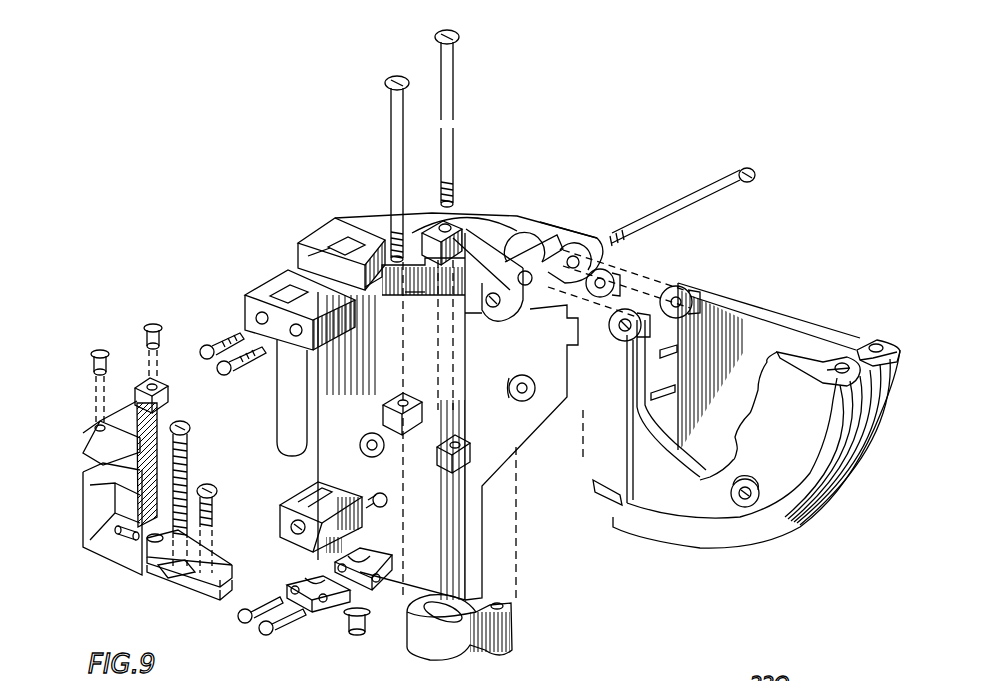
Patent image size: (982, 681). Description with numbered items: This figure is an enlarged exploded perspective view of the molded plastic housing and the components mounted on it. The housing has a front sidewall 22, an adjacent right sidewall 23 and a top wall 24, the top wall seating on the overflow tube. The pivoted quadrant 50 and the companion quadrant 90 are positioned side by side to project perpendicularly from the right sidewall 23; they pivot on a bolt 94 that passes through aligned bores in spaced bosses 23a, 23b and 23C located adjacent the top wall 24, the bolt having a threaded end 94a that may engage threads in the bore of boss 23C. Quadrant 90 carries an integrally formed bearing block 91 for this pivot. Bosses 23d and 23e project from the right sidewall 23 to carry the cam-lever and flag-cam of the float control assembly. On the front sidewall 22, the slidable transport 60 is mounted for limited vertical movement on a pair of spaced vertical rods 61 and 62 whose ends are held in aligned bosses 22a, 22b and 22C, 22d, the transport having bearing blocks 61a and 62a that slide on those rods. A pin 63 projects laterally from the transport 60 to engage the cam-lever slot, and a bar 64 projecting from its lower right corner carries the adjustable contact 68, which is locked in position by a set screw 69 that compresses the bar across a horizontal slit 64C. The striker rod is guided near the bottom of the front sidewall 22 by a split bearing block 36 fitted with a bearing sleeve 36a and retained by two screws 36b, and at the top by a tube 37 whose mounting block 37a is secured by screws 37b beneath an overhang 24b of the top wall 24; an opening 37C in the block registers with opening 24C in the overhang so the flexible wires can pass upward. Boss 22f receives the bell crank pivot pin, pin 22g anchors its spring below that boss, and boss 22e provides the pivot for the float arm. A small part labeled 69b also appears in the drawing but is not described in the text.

The front sidewall 22 is at (440, 528).
The boss 22a is at (402, 300).
The boss 22b is at (437, 388).
The boss 22C is at (450, 226).
The boss 22d is at (442, 466).
The boss 22e is at (285, 492).
The boss 22f is at (375, 457).
The pin 22g is at (382, 504).
The right sidewall 23 is at (543, 393).
The boss 23a is at (582, 236).
The boss 23b is at (530, 235).
The boss 23C is at (497, 322).
The boss 23d is at (508, 394).
The boss 23e is at (640, 272).
The top wall 24 is at (333, 232).
The overhang 24b is at (308, 257).
The opening 24C is at (318, 238).
The split bearing block 36 is at (338, 565).
The bearing sleeve 36a is at (348, 628).
The screws 36b is at (247, 622).
The tube 37 is at (290, 395).
The mounting block 37a is at (250, 302).
The screws 37b is at (218, 360).
The opening 37C is at (285, 280).
The pivoted quadrant 50 is at (800, 340).
The slidable transport 60 is at (74, 494).
The vertical rod 61 is at (398, 130).
The bearing blocks 61a is at (86, 438).
The vertical rod 62 is at (452, 156).
The bearing blocks 62a is at (140, 396).
The pin 63 is at (112, 530).
The bar 64 is at (190, 585).
The horizontal slit 64C is at (215, 602).
The adjustable contact 68 is at (189, 460).
The set screw 69 is at (214, 484).
The pin 69b is at (116, 527).
The companion quadrant 90 is at (633, 418).
The bearing block 91 is at (614, 340).
The bolt 94 is at (688, 192).
The threaded end 94a is at (620, 228).